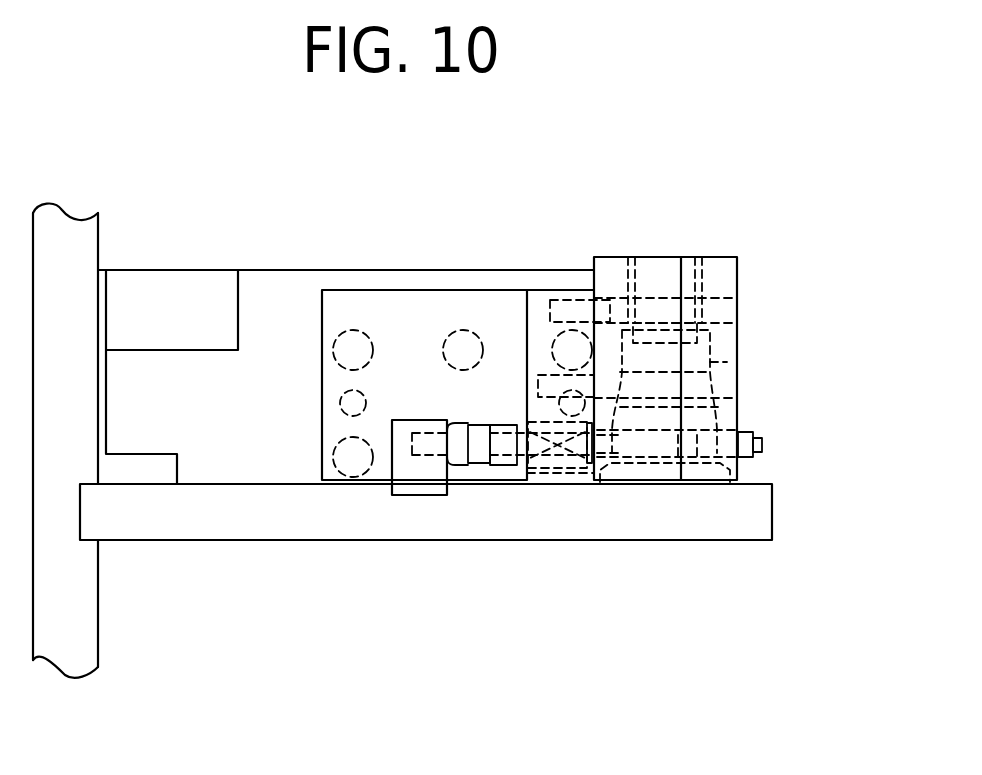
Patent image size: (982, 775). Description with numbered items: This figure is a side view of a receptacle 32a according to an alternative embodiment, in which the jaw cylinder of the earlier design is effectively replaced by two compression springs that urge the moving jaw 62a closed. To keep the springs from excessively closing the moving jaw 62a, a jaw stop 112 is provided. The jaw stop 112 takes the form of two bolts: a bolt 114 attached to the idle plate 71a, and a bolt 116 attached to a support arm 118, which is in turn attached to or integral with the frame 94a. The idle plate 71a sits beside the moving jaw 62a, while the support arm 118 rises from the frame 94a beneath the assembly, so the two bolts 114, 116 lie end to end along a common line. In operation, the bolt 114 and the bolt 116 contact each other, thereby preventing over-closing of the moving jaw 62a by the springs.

The receptacle 32a is at (752, 252).
The moving jaw 62a is at (737, 285).
The idle plate 71a is at (562, 290).
The jaw stop 112 is at (473, 420).
The bolt 114 is at (503, 423).
The bolt 116 is at (462, 422).
The support arm 118 is at (398, 488).
The frame 94a is at (517, 540).